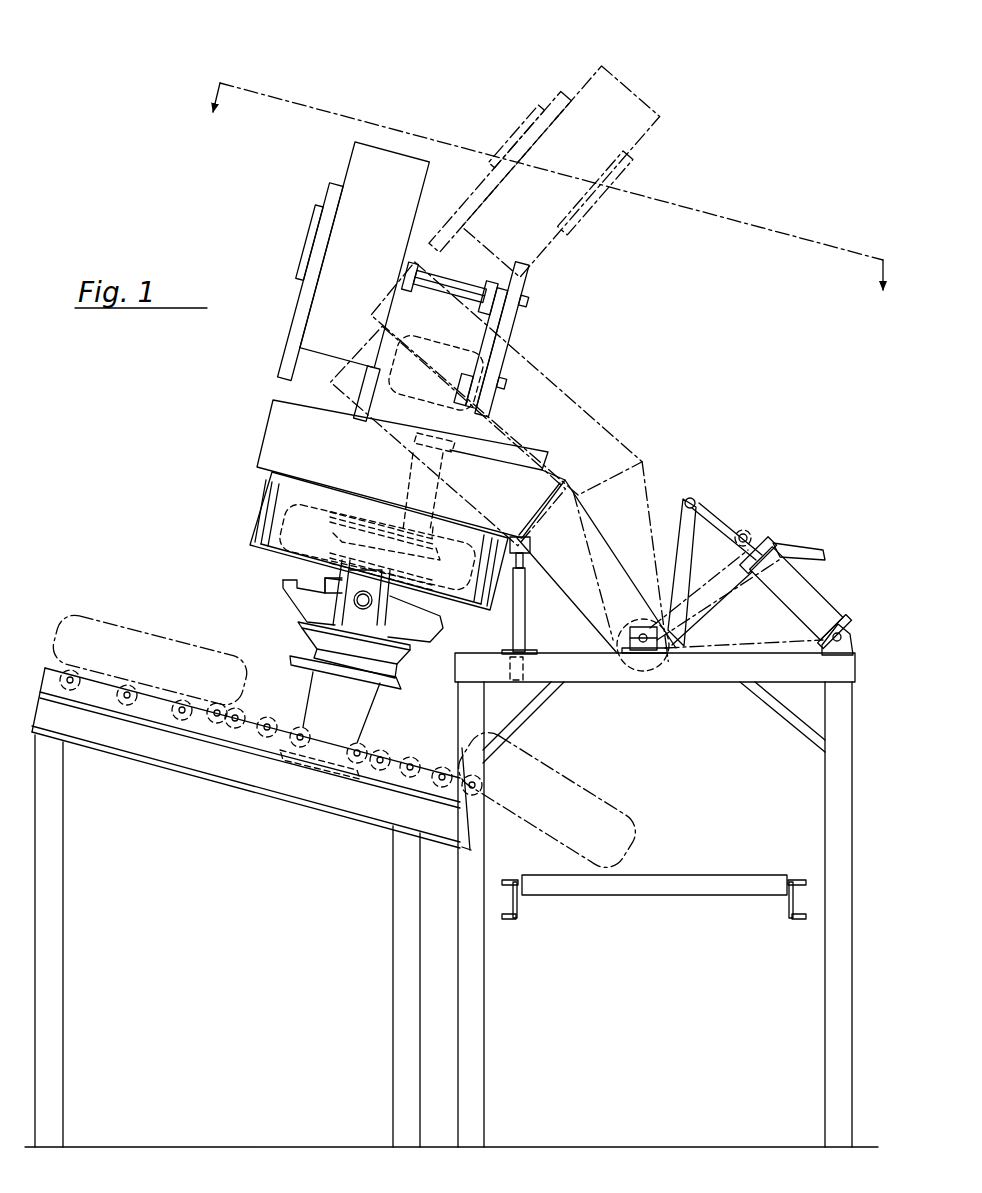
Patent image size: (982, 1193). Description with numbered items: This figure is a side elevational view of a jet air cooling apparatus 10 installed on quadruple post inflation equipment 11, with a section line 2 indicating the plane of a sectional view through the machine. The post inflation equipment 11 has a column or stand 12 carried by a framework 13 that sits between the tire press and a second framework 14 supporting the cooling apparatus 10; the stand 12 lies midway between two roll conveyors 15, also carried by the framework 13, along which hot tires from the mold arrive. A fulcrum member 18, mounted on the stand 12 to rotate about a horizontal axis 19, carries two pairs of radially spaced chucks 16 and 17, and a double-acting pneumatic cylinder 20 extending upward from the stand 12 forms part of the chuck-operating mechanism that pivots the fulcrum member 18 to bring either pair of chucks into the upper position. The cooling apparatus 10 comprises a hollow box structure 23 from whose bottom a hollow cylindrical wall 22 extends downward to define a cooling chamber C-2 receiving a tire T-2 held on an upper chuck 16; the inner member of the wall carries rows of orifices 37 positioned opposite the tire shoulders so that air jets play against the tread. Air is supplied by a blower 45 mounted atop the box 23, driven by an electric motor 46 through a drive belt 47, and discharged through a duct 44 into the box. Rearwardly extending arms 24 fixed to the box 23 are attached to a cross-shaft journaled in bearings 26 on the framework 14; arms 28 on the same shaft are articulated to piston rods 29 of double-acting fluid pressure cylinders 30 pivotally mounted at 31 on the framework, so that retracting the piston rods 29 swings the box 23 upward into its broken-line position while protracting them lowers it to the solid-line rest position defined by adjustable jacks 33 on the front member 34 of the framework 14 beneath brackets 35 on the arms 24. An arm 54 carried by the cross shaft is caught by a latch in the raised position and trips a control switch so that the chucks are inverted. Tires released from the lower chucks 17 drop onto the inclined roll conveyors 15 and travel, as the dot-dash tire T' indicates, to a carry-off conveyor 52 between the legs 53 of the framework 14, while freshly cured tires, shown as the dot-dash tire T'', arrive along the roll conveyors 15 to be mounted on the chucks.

The section line 2- 2 is at (540, 207).
The jet air cooling apparatus 10 is at (230, 456).
The quadruple post inflation equipment 11 is at (271, 626).
The column or stand 12 is at (353, 698).
The framework 13 is at (383, 835).
The framework 14 is at (760, 738).
The roll conveyors 15 is at (233, 742).
The chucks 16 is at (392, 512).
The chucks 17 is at (316, 671).
The fulcrum member 18 is at (372, 624).
The horizontal axis 19 is at (352, 604).
The double-acting pneumatic cylinder 20 is at (445, 468).
The hollow cylindrical wall 22 is at (258, 512).
The hollow box structure 23 is at (268, 421).
The rearwardly extending arms 24 is at (590, 612).
The bearings 26 is at (645, 672).
The arms 28 is at (668, 530).
The piston rods 29 is at (720, 526).
The double-acting fluid pressure cylinders 30 is at (818, 592).
The pivotal mounting 31 is at (845, 632).
The adjustable jacks 33 is at (513, 630).
The front member 34 is at (525, 668).
The brackets 35 is at (530, 547).
The rows of orifices 37 is at (500, 519).
The duct 44 is at (300, 383).
The blower 45 is at (355, 158).
The electric motor 46 is at (452, 336).
The drive belt 47 is at (500, 350).
The carry-off conveyor 52 is at (621, 894).
The legs 53 is at (476, 1027).
The arm 54 is at (803, 560).
The tire T-2 is at (306, 497).
The tire T' is at (547, 800).
The tire T'' is at (149, 648).
The cooling chamber C-2 is at (275, 555).